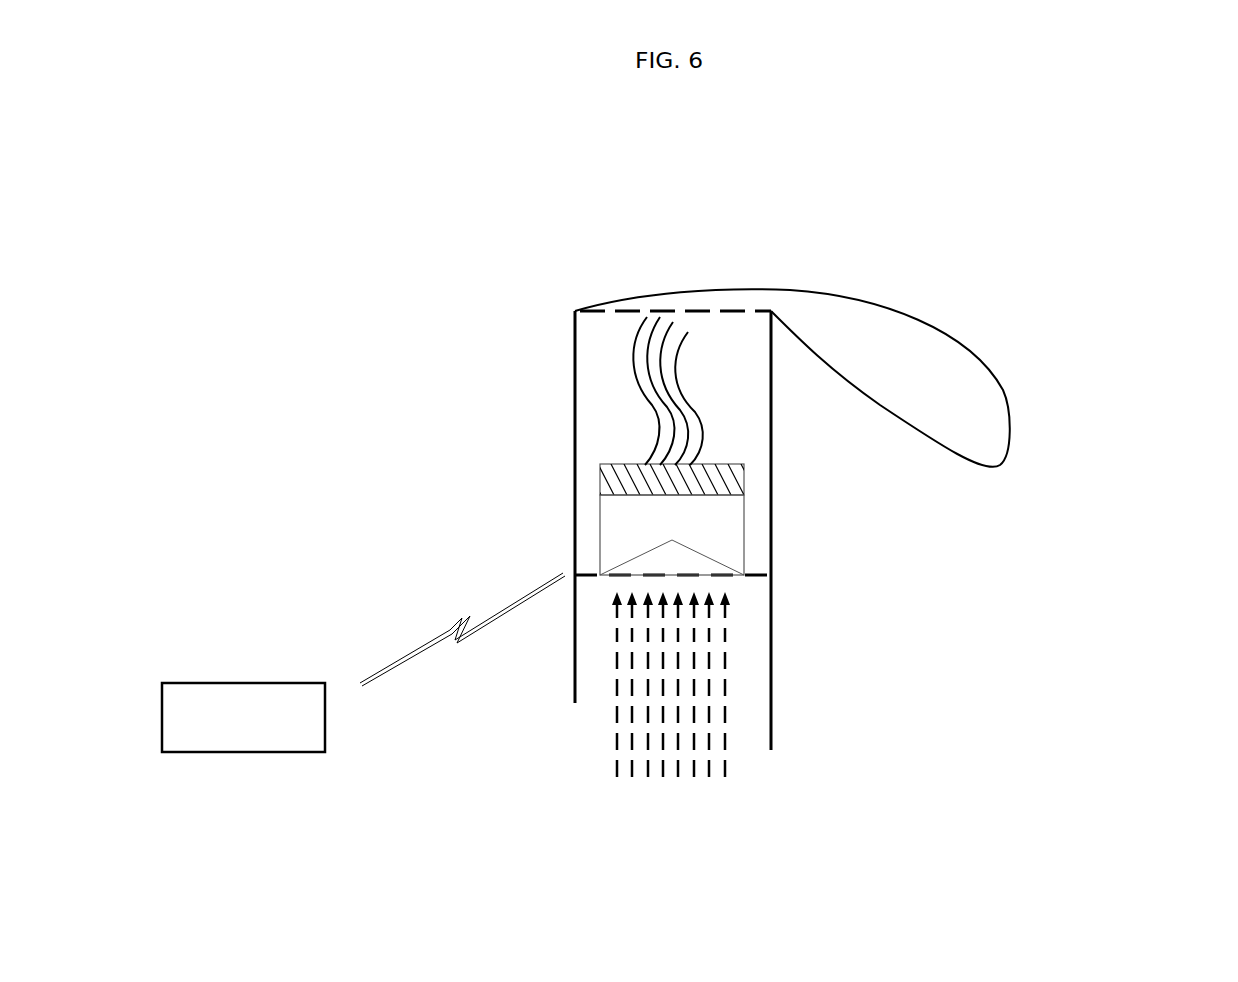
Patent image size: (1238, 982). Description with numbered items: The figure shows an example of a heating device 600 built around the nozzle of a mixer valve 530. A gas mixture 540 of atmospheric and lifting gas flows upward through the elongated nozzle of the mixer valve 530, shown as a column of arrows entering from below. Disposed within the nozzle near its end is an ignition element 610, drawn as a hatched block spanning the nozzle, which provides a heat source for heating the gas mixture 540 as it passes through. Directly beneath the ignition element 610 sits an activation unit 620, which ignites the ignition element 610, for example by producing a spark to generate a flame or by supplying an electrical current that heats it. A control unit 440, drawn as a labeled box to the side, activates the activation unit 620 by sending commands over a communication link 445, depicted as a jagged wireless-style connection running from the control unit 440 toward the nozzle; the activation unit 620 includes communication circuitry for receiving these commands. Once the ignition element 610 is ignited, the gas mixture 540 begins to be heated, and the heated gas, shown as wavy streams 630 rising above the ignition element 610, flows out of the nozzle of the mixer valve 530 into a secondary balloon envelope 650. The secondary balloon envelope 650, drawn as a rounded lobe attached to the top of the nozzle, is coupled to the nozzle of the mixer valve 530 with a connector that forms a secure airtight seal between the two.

The heating device 600 is at (1223, 71).
The mixer valve 530 is at (771, 677).
The gas mixture 540 is at (617, 742).
The ignition element 610 is at (600, 472).
The activation unit 620 is at (672, 563).
The heated gas streams 630 is at (632, 359).
The secondary balloon envelope 650 is at (960, 340).
The control unit 440 is at (247, 683).
The communication link 445 is at (433, 637).